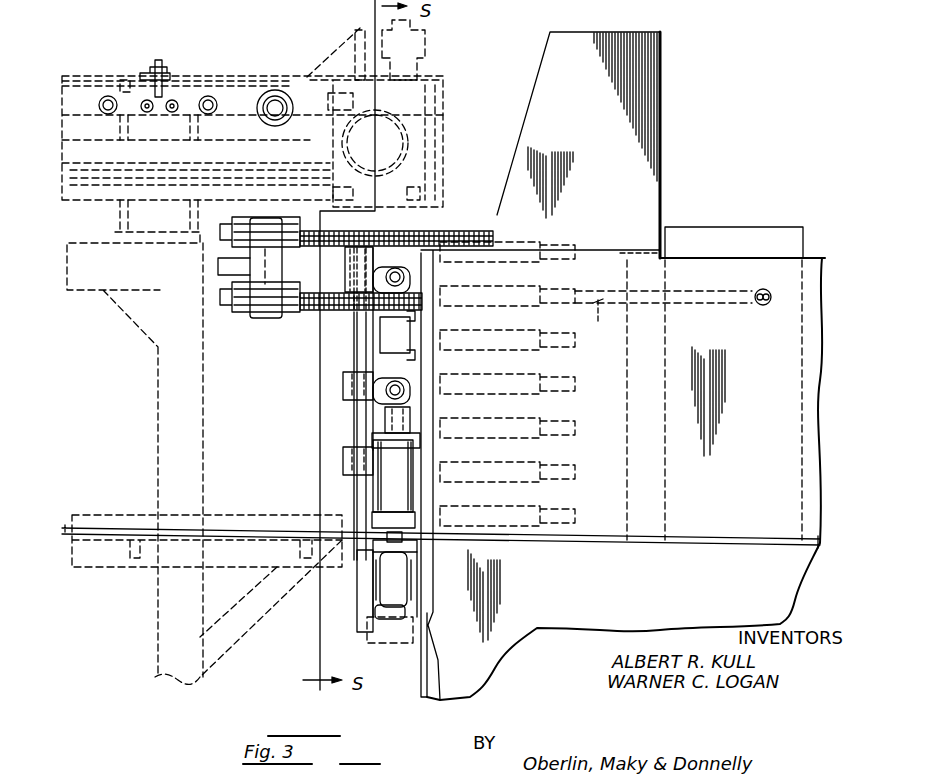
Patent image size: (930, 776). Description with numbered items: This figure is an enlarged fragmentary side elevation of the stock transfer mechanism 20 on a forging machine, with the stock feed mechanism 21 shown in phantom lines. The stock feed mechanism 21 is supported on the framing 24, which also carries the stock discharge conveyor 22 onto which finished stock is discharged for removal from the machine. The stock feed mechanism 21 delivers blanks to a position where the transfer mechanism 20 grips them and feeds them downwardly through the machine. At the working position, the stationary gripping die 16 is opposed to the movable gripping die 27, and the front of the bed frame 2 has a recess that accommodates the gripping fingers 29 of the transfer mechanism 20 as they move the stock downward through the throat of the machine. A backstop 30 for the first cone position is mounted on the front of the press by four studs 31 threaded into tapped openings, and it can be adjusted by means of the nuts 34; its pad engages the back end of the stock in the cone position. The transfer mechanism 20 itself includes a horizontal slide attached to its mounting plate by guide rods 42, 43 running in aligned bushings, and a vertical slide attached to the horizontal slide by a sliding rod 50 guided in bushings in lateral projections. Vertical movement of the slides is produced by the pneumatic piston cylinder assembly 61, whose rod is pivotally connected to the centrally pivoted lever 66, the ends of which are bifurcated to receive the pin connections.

The bed frame 2 is at (503, 640).
The stationary gripping die 16 is at (710, 227).
The stock transfer mechanism 20 is at (351, 377).
The stock feed mechanism 21 is at (228, 70).
The stock discharge conveyor 22 is at (130, 527).
The framing 24 is at (195, 468).
The movable gripping die 27 is at (734, 219).
The gripping fingers 29 is at (562, 242).
The backstop 30 is at (268, 320).
The studs 31 is at (330, 313).
The nuts 34 is at (242, 313).
The guide rod 42 is at (400, 268).
The guide rod 43 is at (352, 413).
The sliding rod 50 is at (350, 353).
The pneumatic piston cylinder assembly 61 is at (390, 490).
The lever 66 is at (378, 587).